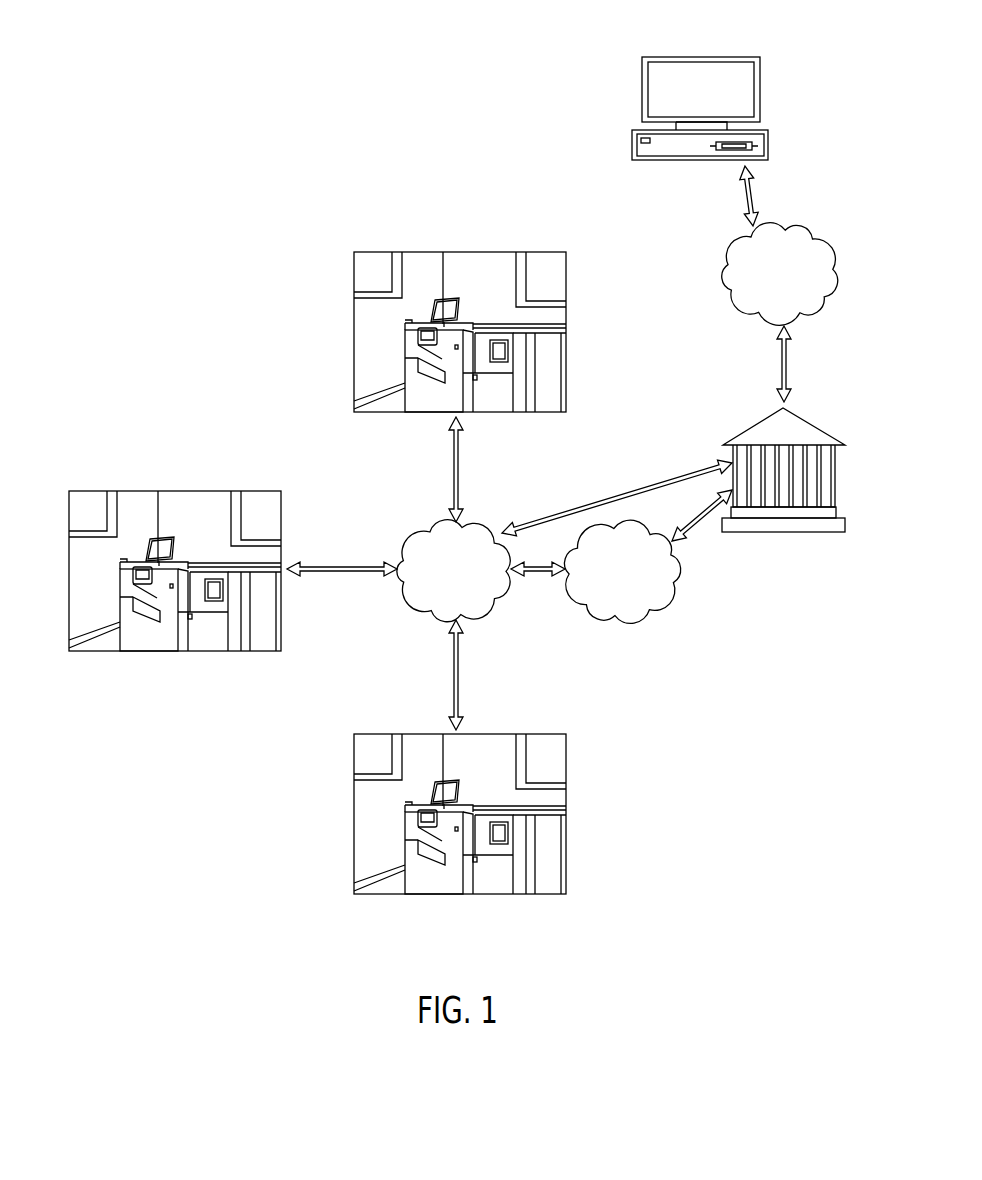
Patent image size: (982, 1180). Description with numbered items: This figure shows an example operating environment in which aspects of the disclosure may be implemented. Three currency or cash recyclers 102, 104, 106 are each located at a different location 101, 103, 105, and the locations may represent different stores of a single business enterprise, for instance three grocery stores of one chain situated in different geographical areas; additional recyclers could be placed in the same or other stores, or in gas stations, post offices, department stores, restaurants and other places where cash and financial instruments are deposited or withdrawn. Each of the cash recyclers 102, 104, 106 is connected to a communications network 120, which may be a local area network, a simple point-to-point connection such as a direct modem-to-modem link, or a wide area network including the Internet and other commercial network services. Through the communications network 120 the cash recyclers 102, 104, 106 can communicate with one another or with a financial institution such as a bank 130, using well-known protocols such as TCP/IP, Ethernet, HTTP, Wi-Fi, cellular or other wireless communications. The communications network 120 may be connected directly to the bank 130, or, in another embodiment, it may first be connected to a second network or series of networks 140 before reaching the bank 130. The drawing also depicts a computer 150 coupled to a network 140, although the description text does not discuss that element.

The location 101 is at (473, 262).
The cash recycler 102 is at (423, 400).
The location 103 is at (190, 500).
The cash recycler 104 is at (135, 638).
The location 105 is at (362, 803).
The cash recycler 106 is at (427, 883).
The communications network 120 is at (490, 603).
The bank 130 is at (757, 425).
The second network or series of networks 140 is at (622, 617).
The computer 150 is at (731, 56).